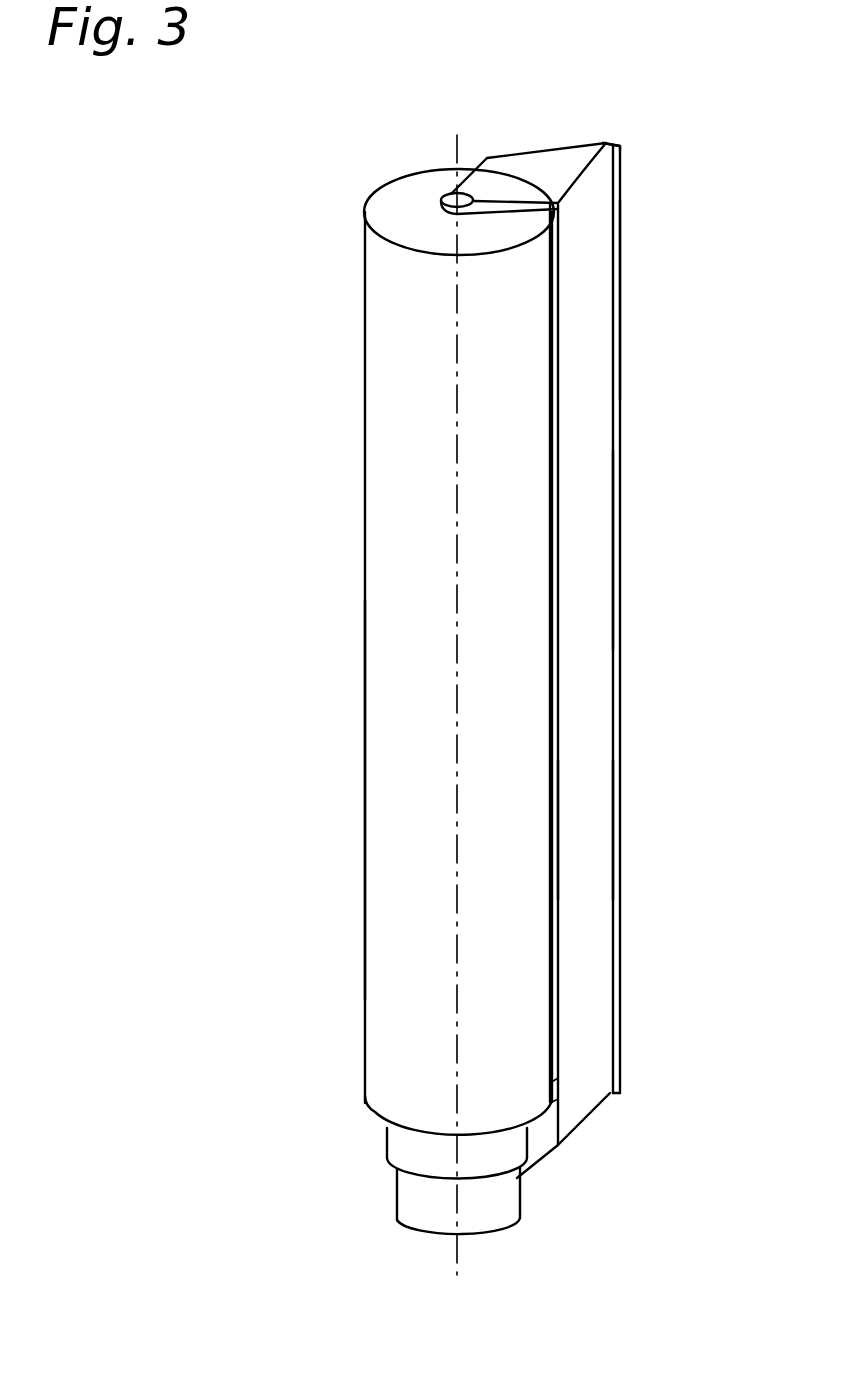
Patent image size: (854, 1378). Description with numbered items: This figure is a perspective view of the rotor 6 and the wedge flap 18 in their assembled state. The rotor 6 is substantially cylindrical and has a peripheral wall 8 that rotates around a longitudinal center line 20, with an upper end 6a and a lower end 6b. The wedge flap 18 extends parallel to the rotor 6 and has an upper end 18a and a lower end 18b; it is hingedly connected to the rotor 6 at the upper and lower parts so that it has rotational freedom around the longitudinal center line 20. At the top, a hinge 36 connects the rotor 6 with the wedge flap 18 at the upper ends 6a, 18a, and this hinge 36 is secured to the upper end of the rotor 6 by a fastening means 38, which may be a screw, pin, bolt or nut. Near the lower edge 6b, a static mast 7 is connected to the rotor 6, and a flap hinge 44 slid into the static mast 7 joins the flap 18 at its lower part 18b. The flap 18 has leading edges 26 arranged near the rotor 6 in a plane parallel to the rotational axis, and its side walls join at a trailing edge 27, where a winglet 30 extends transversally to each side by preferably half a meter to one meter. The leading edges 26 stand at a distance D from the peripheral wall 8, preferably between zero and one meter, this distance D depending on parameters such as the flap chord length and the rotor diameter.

The rotor 6 is at (398, 625).
The upper end of the rotor 6a is at (366, 206).
The lower end of the rotor 6b is at (377, 1122).
The static mast 7 is at (415, 1208).
The peripheral wall 8 is at (366, 806).
The wedge flap 18 is at (588, 395).
The upper end of the flap 18a is at (612, 171).
The lower end of the flap 18b is at (588, 1112).
The longitudinal center line 20 is at (457, 458).
The leading edge 26 is at (560, 692).
The trailing edge 27 is at (614, 553).
The winglet 30 is at (620, 283).
The hinge 36 is at (527, 173).
The fastening means 38 is at (449, 196).
The flap hinge 44 is at (400, 1148).
The distance D is at (553, 829).